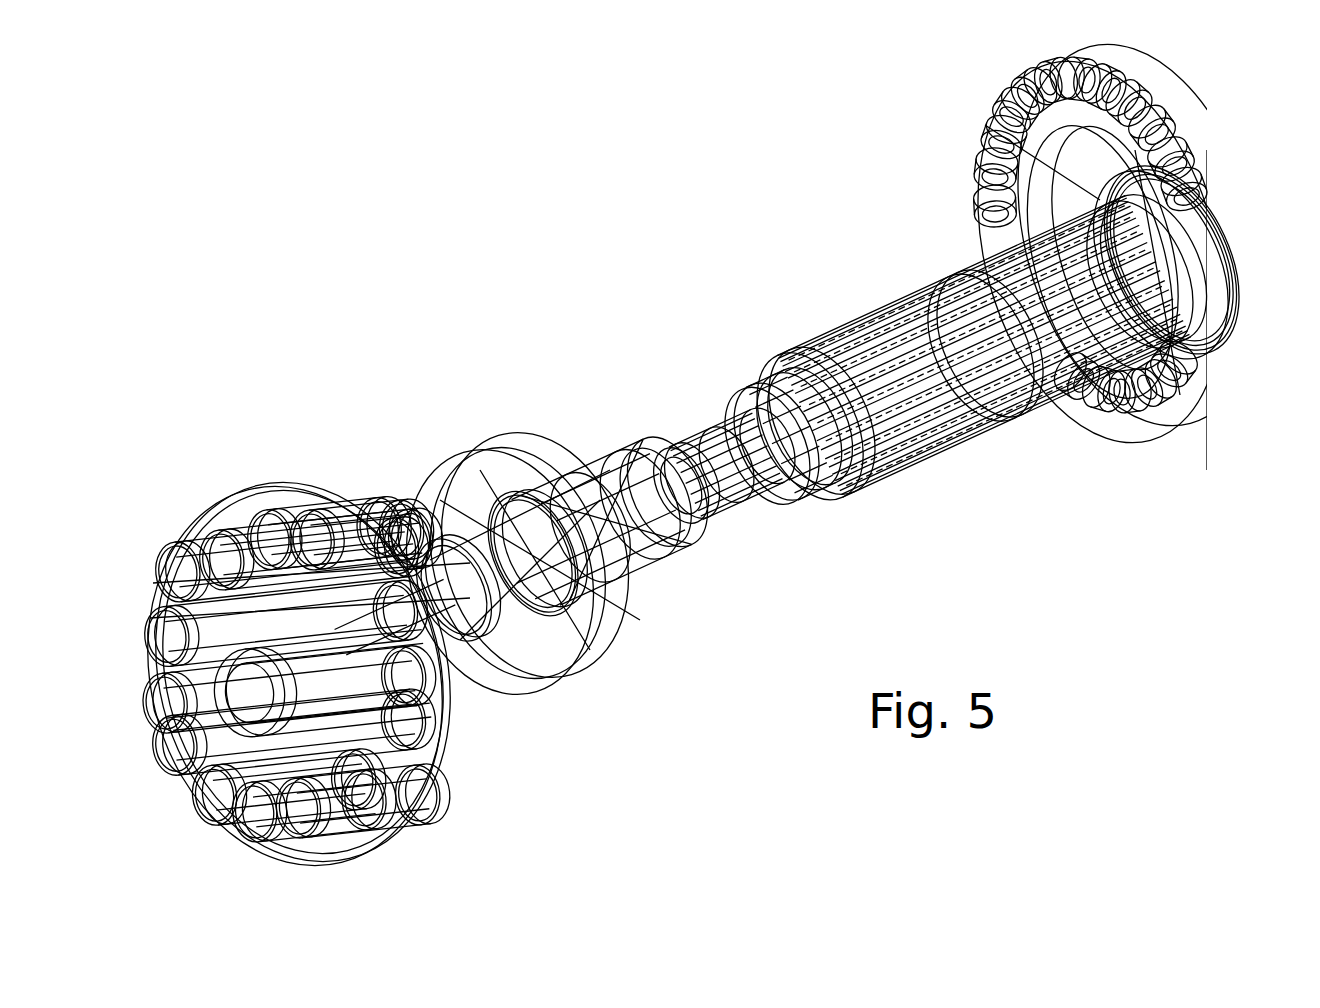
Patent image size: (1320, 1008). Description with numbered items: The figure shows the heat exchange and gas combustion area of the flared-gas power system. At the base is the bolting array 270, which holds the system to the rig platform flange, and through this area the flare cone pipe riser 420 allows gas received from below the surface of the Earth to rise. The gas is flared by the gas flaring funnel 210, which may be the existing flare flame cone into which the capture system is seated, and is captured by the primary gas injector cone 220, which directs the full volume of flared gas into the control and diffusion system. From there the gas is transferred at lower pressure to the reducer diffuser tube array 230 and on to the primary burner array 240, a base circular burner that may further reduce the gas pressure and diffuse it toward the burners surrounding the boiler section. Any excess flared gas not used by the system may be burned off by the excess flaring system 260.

The gas flaring funnel 210 is at (425, 479).
The primary gas injector cone 220 is at (583, 441).
The reducer diffuser tube array 230 is at (700, 384).
The primary burner array 240 is at (877, 284).
The excess flaring system 260 is at (1001, 103).
The bolting array 270 is at (429, 795).
The flare cone pipe riser 420 is at (471, 670).